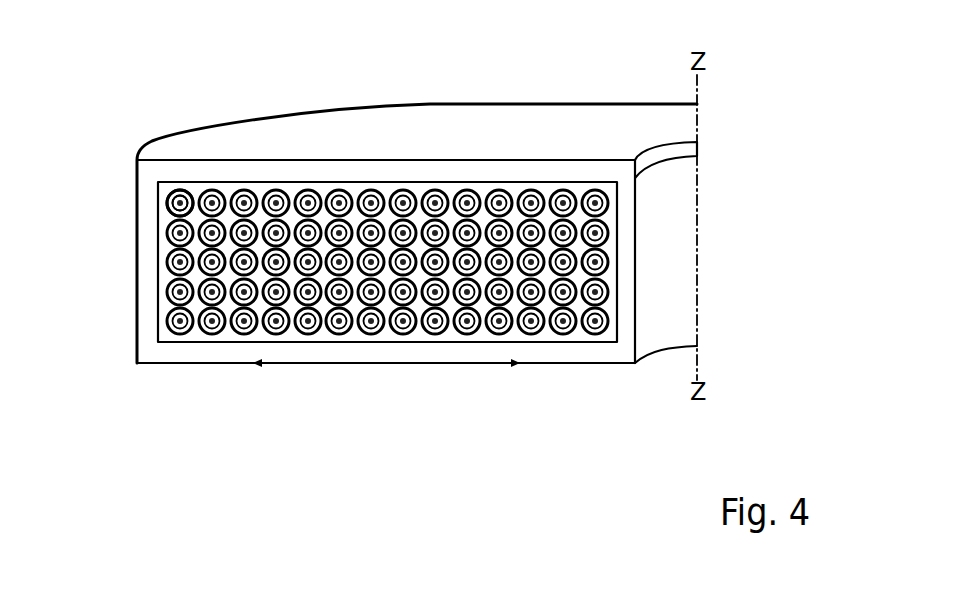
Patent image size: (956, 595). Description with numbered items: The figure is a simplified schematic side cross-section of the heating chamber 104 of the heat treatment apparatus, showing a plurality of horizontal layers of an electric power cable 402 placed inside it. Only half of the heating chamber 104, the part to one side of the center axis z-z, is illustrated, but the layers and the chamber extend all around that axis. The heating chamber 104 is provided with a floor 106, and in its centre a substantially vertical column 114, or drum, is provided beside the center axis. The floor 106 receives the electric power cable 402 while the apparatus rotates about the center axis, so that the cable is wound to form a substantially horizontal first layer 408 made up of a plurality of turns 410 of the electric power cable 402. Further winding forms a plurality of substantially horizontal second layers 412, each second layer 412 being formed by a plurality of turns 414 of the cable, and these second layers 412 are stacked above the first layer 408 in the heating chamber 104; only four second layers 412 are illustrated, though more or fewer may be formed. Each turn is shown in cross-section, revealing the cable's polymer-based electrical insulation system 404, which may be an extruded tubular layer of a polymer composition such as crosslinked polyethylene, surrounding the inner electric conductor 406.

The heating chamber 104 is at (514, 190).
The floor 106 is at (289, 337).
The column 114 is at (622, 316).
The electric power cable 402 is at (164, 349).
The polymer-based electrical insulation system 404 is at (180, 197).
The inner electric conductor 406 is at (192, 192).
The first layer 408 is at (156, 320).
The turns 410 is at (399, 346).
The second layers 412 is at (156, 202).
The turns 414 is at (311, 188).